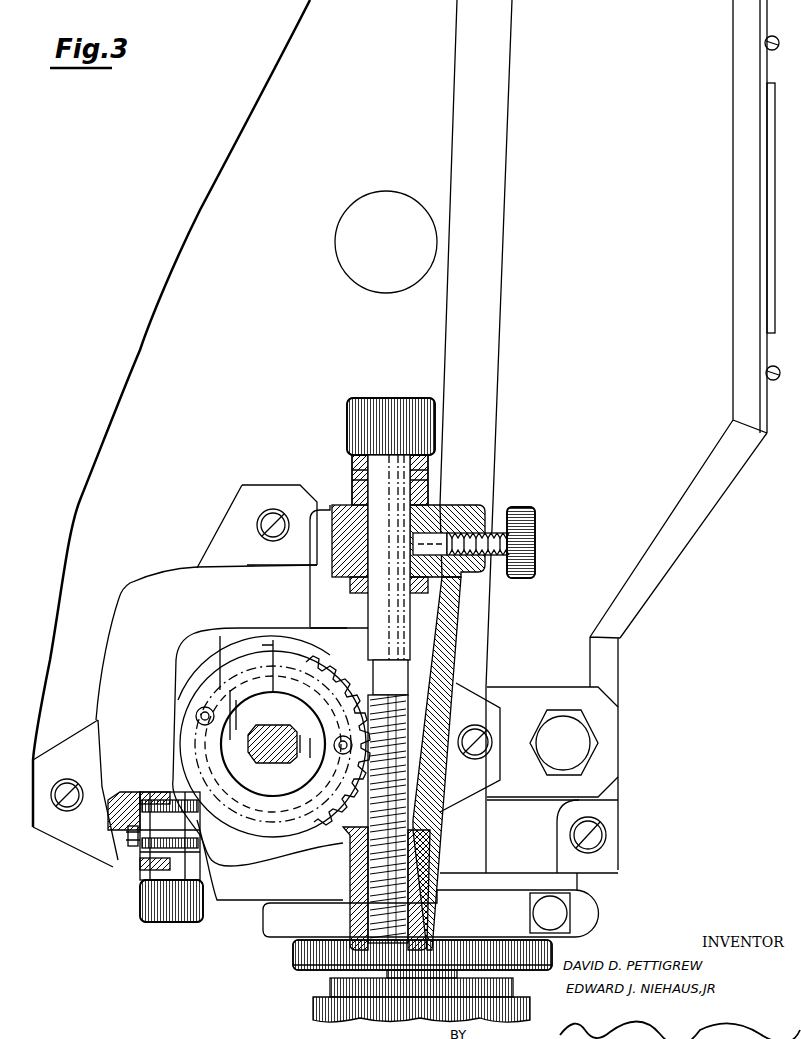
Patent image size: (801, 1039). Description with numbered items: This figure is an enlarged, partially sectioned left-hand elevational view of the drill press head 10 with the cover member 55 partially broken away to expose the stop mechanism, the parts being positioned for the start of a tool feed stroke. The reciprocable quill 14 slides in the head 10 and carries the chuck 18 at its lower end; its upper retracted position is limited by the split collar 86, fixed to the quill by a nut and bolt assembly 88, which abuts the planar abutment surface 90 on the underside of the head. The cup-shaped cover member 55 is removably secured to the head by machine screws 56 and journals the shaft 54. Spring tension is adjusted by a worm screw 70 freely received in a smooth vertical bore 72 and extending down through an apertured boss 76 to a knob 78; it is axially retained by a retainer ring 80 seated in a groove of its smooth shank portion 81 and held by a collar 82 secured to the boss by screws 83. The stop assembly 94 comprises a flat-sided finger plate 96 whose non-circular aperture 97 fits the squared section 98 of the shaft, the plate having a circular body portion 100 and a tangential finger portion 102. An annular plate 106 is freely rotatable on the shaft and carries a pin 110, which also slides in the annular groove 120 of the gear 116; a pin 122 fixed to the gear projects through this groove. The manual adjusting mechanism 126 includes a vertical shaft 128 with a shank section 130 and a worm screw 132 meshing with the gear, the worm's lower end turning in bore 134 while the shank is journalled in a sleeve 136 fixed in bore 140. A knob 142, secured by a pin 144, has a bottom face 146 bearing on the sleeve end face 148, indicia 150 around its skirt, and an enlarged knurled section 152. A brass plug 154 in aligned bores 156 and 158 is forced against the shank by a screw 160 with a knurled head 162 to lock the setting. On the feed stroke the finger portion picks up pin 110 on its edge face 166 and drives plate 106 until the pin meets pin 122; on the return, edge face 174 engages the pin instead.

The drill press head 10 is at (672, 555).
The quill 14 is at (538, 972).
The chuck 18 is at (530, 1008).
The shaft 54 is at (248, 745).
The cover member 55 is at (135, 605).
The machine screws 56 is at (273, 512).
The worm screw 70 is at (210, 780).
The bore 72 is at (128, 795).
The boss 76 is at (118, 820).
The knob 78 is at (192, 905).
The retainer ring 80 is at (142, 818).
The shank portion 81 is at (162, 795).
The collar 82 is at (128, 853).
The screws 83 is at (132, 848).
The split collar 86 is at (590, 917).
The nut and bolt assembly 88 is at (560, 912).
The abutment surface 90 is at (481, 888).
The stop assembly 94 is at (163, 701).
The finger plate 96 is at (319, 692).
The aperture 97 is at (270, 762).
The squared section 98 is at (276, 722).
The body portion 100 is at (284, 785).
The finger portion 102 is at (232, 658).
The annular plate 106 is at (223, 835).
The pin 110 is at (220, 708).
The gear 116 is at (330, 845).
The annular groove 120 is at (370, 700).
The pin 122 is at (343, 760).
The manual adjusting mechanism 126 is at (430, 392).
The shaft 128 is at (420, 629).
The shank section 130 is at (345, 600).
The worm screw 132 is at (395, 955).
The bore 134 is at (405, 852).
The sleeve 136 is at (322, 545).
The bore 140 is at (352, 506).
The knob 142 is at (433, 432).
The pin 144 is at (352, 462).
The bottom face 146 is at (432, 506).
The end face 148 is at (389, 557).
The indicia 150 is at (426, 490).
The knurled section 152 is at (378, 415).
The plug 154 is at (430, 542).
The bore 156 is at (405, 590).
The bore 158 is at (464, 572).
The screw 160 is at (535, 545).
The knurled head 162 is at (536, 550).
The edge face 166 is at (280, 658).
The edge face 174 is at (207, 675).